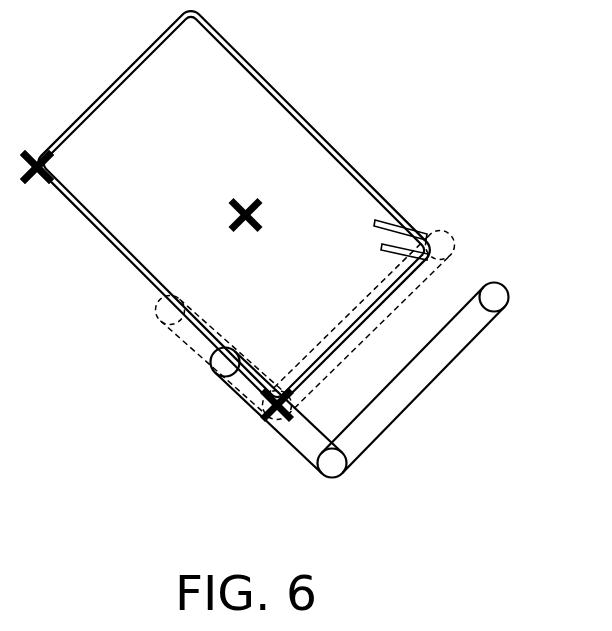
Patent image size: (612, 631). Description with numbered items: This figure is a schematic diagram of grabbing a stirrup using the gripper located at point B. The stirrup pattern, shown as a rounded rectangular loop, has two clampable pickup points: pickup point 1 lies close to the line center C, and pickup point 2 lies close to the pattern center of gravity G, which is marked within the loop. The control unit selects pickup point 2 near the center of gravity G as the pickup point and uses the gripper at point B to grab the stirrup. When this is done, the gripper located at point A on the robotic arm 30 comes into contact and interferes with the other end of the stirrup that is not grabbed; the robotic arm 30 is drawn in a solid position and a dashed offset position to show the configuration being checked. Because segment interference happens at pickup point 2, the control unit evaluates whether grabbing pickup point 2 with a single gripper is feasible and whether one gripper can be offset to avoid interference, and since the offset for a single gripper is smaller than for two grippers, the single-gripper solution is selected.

The pickup point 1 is at (37, 144).
The pickup point 2 is at (271, 427).
The robotic arm 30 is at (452, 232).
The point A is at (510, 292).
The point B is at (249, 385).
The line center C is at (52, 167).
The pattern center of gravity G is at (245, 237).